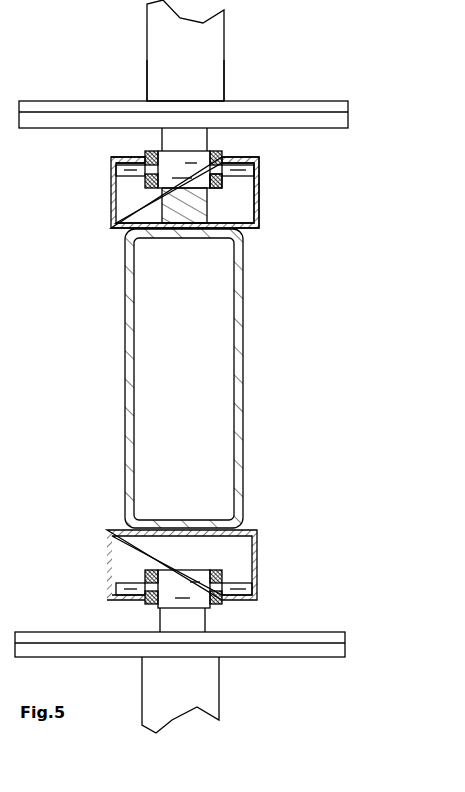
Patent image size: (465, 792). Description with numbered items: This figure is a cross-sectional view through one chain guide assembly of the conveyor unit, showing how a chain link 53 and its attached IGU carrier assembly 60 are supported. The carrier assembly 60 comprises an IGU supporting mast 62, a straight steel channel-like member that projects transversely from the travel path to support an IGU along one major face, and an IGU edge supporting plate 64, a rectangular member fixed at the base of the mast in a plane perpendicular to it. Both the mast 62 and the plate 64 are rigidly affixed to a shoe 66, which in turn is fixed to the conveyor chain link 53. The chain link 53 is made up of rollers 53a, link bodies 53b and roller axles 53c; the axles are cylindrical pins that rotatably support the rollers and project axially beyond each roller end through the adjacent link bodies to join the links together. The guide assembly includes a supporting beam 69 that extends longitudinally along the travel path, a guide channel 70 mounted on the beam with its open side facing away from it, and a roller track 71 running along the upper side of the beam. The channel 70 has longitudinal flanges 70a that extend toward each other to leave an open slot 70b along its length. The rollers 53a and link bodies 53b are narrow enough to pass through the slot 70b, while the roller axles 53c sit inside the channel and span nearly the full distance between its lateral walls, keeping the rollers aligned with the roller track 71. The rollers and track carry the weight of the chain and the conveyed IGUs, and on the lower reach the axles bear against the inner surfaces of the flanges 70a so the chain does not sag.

The IGU carrier assembly 60 is at (214, 61).
The IGU supporting mast 62 is at (176, 48).
The IGU edge supporting plate 64 is at (348, 101).
The shoe 66 is at (190, 137).
The chain link 53 is at (158, 152).
The roller 53a is at (187, 580).
The link body 53b is at (216, 183).
The roller axle 53c is at (240, 172).
The supporting beam 69 is at (243, 335).
The guide channel 70 is at (111, 207).
The longitudinal flange 70a is at (145, 155).
The open slot 70b is at (218, 150).
The roller track 71 is at (182, 213).